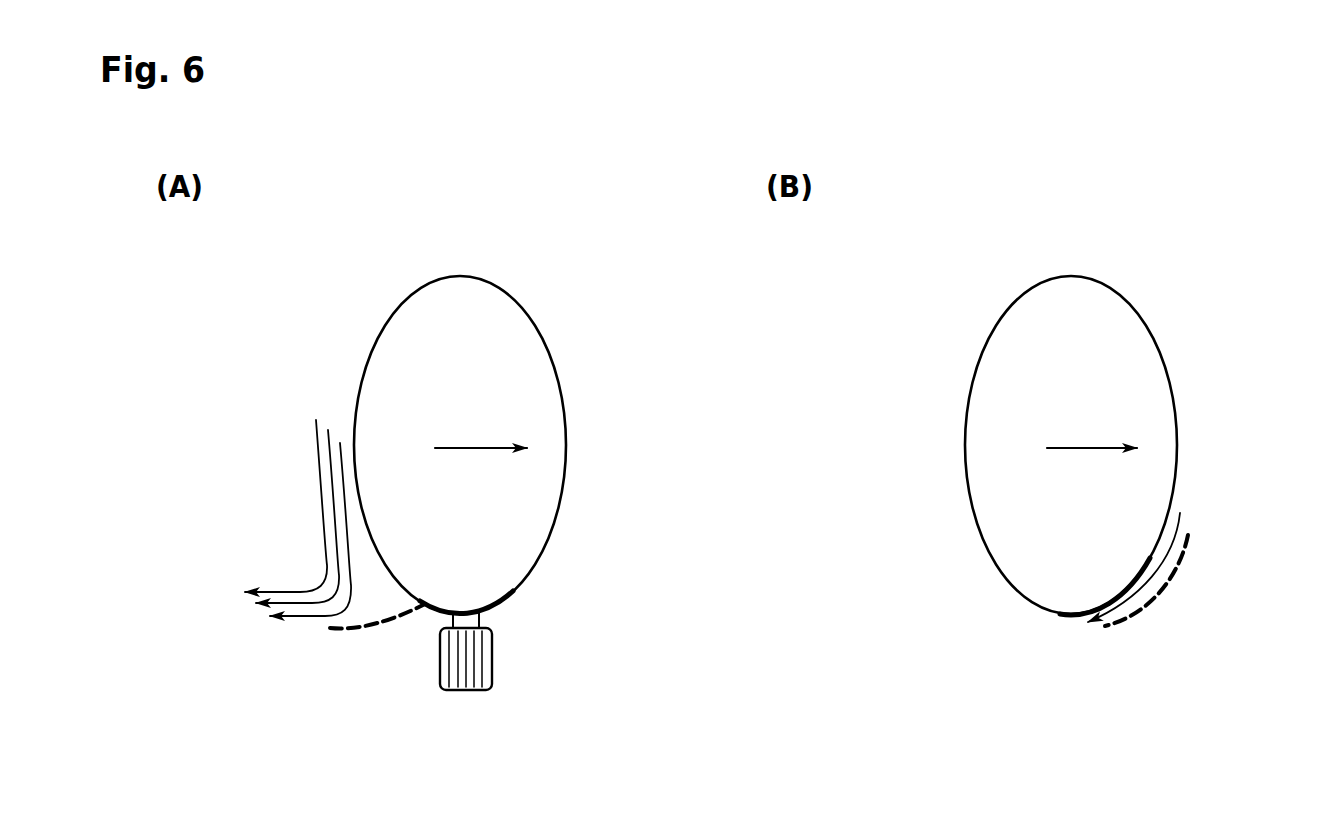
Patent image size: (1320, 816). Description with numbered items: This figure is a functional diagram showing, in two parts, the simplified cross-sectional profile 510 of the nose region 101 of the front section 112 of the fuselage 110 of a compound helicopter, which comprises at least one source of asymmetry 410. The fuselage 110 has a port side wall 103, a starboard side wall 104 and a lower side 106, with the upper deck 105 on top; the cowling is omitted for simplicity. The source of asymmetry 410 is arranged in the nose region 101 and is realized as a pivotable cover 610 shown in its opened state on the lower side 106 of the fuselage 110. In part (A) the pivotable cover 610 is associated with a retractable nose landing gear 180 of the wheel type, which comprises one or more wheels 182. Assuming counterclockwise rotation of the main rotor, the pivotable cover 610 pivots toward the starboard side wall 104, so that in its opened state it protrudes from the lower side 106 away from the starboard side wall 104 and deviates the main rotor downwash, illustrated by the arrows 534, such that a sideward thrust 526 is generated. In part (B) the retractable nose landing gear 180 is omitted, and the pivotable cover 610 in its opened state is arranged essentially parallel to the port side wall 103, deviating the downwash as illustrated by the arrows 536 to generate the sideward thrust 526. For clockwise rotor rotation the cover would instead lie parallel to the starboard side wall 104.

The nose region 101 is at (500, 618).
The port side wall 103 is at (567, 476).
The starboard side wall 104 is at (356, 388).
The upper deck 105 is at (513, 316).
The lower side 106 is at (490, 695).
The fuselage 110 is at (558, 378).
The front section 112 is at (533, 587).
The retractable nose landing gear 180 is at (494, 656).
The wheels 182 is at (468, 665).
The source of asymmetry 410 is at (389, 633).
The simplified cross-sectional profile 510 is at (380, 316).
The sideward thrust 526 is at (483, 447).
The arrows 534 is at (318, 530).
The arrows 536 is at (1181, 525).
The pivotable cover 610 is at (352, 632).